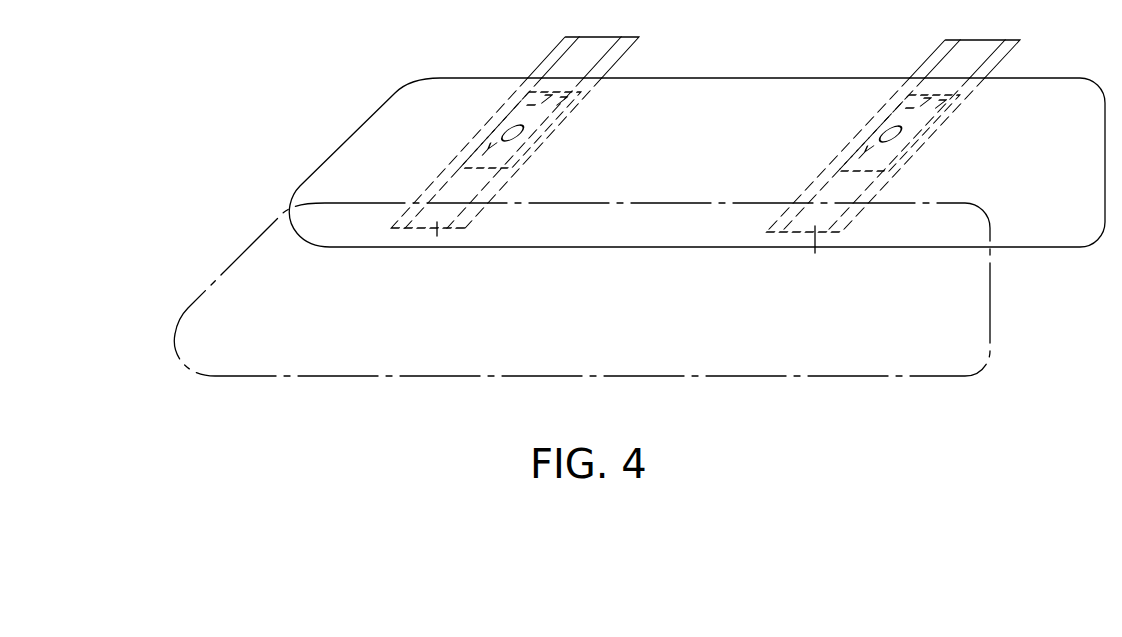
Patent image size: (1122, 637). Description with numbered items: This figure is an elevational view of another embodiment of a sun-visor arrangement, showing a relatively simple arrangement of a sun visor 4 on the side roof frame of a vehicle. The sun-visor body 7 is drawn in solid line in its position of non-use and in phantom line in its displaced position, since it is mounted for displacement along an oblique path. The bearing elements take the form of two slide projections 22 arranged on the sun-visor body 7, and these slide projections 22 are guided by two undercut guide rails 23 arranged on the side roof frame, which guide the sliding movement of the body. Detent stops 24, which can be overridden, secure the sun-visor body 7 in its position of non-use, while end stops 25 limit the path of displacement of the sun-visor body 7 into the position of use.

The sun visor 4 is at (284, 202).
The sun-visor body 7 is at (1083, 161).
The slide projections 22 is at (588, 53).
The undercut guide rails 23 is at (613, 68).
The detent stops 24 is at (480, 136).
The end stops 25 is at (436, 238).